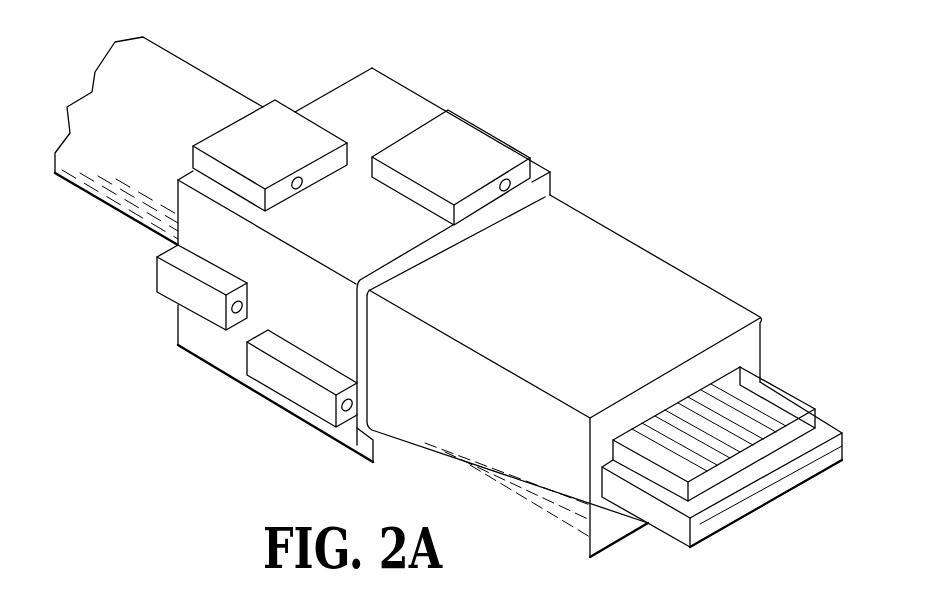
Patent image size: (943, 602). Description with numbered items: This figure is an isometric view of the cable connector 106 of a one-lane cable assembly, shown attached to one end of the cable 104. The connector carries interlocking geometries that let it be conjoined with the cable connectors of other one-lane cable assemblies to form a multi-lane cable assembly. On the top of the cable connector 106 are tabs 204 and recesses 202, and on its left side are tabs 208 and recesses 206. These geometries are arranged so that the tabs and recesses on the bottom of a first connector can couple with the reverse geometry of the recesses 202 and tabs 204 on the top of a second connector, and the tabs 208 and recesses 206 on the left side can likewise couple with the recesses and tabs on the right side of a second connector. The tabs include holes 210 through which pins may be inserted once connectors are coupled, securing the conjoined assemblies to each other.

The cable 104 is at (203, 70).
The cable connector 106 is at (652, 255).
The recesses 202 is at (392, 125).
The tabs 204 is at (290, 152).
The recesses 206 is at (327, 323).
The tabs 208 is at (182, 288).
The holes 210 is at (508, 192).